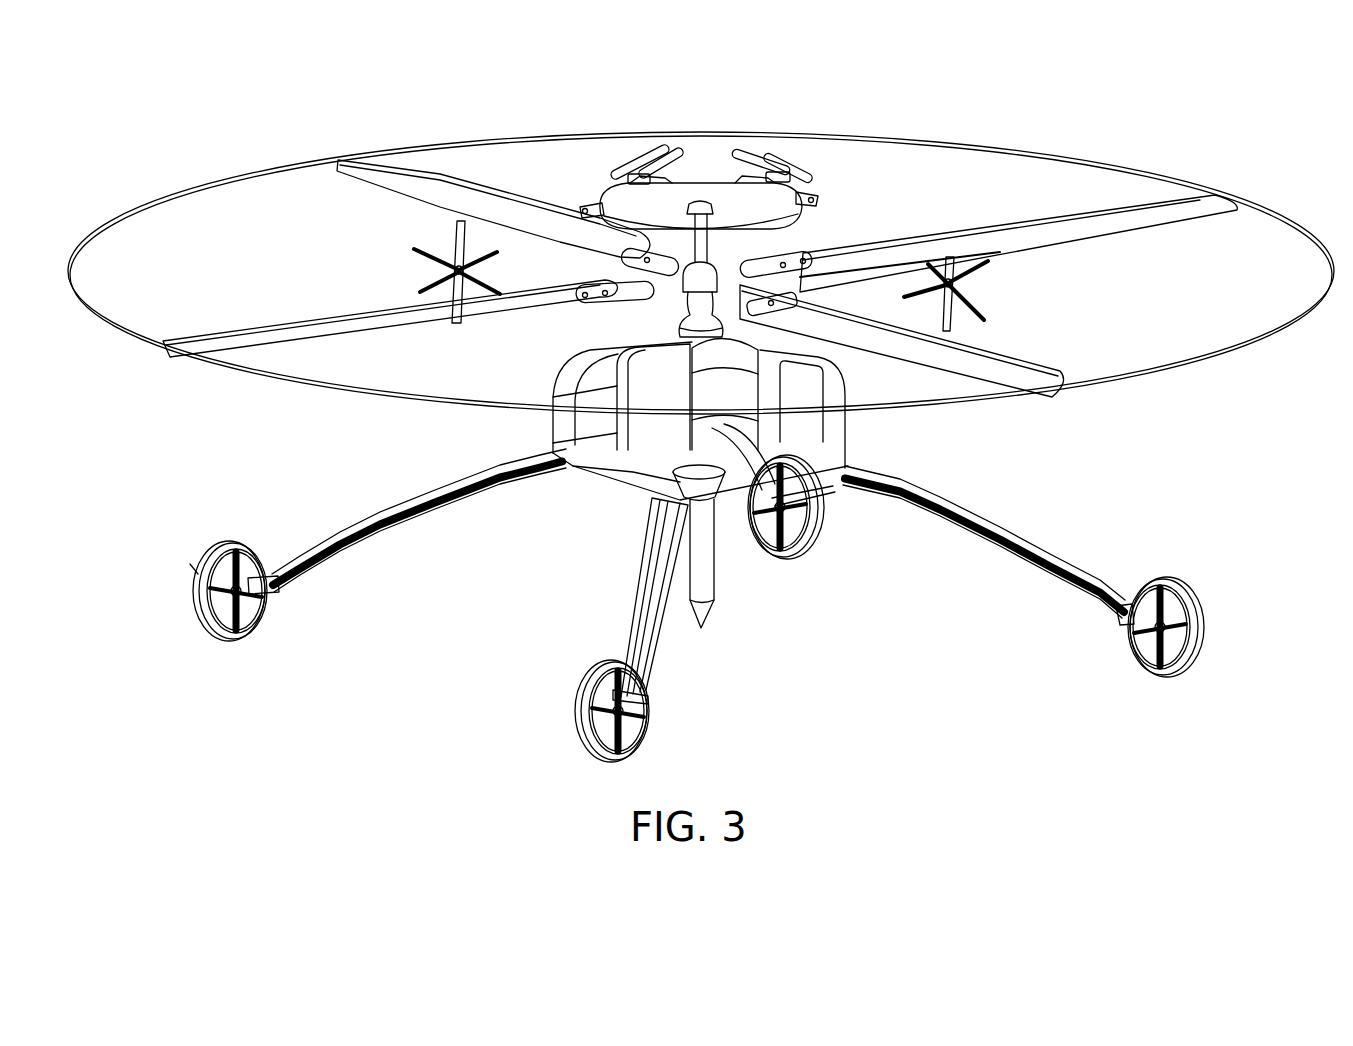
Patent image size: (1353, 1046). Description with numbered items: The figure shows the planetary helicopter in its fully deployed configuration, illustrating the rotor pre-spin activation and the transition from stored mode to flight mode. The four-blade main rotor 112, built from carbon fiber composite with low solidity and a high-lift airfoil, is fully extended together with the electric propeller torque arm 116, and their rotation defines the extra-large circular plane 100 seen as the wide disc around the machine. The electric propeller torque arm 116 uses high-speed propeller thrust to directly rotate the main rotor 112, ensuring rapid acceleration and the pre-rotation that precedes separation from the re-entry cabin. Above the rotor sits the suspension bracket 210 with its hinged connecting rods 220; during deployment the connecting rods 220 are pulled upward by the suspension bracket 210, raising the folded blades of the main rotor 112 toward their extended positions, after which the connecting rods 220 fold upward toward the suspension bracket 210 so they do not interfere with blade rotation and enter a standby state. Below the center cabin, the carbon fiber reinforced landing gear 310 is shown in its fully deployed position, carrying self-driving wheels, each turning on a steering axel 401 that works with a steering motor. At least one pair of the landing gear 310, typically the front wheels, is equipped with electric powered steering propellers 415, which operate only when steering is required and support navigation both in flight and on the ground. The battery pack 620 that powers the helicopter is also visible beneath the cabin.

The circular plane 100 is at (1194, 361).
The main rotor 112 is at (1140, 199).
The electric propeller torque arm 116 is at (412, 288).
The suspension bracket 210 is at (598, 191).
The connecting rods 220 is at (775, 160).
The landing gear 310 is at (1034, 543).
The steering axel 401 is at (258, 635).
The electric powered steering propellers 415 is at (832, 491).
The battery pack 620 is at (712, 603).